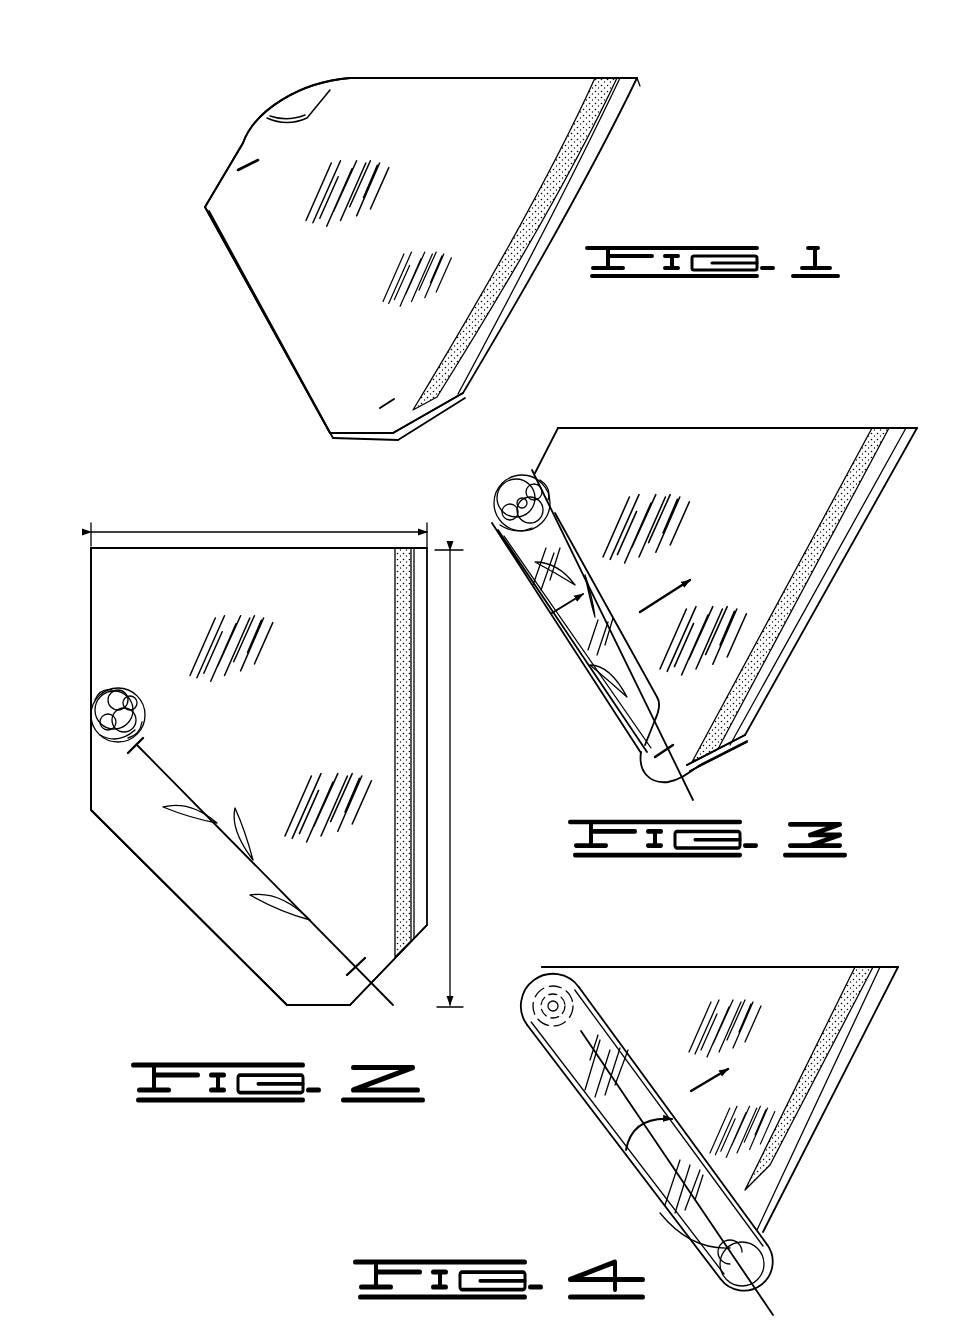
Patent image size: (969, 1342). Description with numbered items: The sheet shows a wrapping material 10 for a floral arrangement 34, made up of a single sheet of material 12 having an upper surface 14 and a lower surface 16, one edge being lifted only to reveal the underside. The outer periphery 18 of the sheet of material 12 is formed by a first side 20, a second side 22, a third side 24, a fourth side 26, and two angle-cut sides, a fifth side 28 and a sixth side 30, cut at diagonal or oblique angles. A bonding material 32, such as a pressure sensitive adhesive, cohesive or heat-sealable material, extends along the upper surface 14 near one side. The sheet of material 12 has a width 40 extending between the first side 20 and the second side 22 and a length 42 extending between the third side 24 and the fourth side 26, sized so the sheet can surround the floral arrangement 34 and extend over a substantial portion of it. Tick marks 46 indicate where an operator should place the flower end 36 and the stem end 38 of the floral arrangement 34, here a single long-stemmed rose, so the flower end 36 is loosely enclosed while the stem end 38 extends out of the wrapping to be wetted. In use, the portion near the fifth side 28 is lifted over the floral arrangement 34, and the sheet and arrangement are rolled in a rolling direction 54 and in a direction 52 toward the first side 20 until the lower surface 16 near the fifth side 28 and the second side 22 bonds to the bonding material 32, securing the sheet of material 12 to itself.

In FIG. 1, the wrapping material 10 is at (405, 240).
In FIG. 2, the wrapping material 10 is at (271, 757).
In FIG. 3, the wrapping material 10 is at (693, 560).
In FIG. 4, the wrapping material 10 is at (707, 1097).
In FIG. 1, the sheet of material 12 is at (405, 246).
In FIG. 2, the sheet of material 12 is at (271, 772).
In FIG. 3, the sheet of material 12 is at (726, 570).
In FIG. 4, the sheet of material 12 is at (720, 1068).
In FIG. 1, the upper surface 14 is at (363, 110).
In FIG. 2, the upper surface 14 is at (167, 567).
In FIG. 3, the upper surface 14 is at (607, 450).
In FIG. 4, the upper surface 14 is at (621, 985).
In FIG. 1, the lower surface 16 is at (295, 103).
In FIG. 1, the outer periphery 18 is at (232, 267).
In FIG. 2, the outer periphery 18 is at (141, 868).
In FIG. 3, the outer periphery 18 is at (568, 532).
In FIG. 1, the first side 20 is at (567, 217).
In FIG. 2, the first side 20 is at (432, 758).
In FIG. 3, the first side 20 is at (817, 608).
In FIG. 4, the first side 20 is at (809, 1140).
In FIG. 1, the second side 22 is at (220, 185).
In FIG. 2, the second side 22 is at (91, 598).
In FIG. 3, the second side 22 is at (542, 452).
In FIG. 4, the second side 22 is at (535, 978).
In FIG. 1, the third side 24 is at (445, 78).
In FIG. 2, the third side 24 is at (300, 548).
In FIG. 3, the third side 24 is at (677, 428).
In FIG. 4, the third side 24 is at (692, 967).
In FIG. 1, the fourth side 26 is at (355, 440).
In FIG. 2, the fourth side 26 is at (302, 1008).
In FIG. 3, the fourth side 26 is at (657, 710).
In FIG. 1, the fifth side 28 is at (290, 357).
In FIG. 2, the fifth side 28 is at (223, 945).
In FIG. 3, the fifth side 28 is at (557, 503).
In FIG. 1, the sixth side 30 is at (425, 410).
In FIG. 2, the sixth side 30 is at (388, 967).
In FIG. 3, the sixth side 30 is at (717, 757).
In FIG. 1, the bonding material 32 is at (540, 197).
In FIG. 2, the bonding material 32 is at (407, 728).
In FIG. 3, the bonding material 32 is at (805, 572).
In FIG. 4, the bonding material 32 is at (805, 1090).
In FIG. 2, the floral arrangement 34 is at (120, 690).
In FIG. 2, the flower end 36 is at (112, 700).
In FIG. 2, the stem end 38 is at (380, 1008).
In FIG. 3, the stem end 38 is at (680, 785).
In FIG. 4, the stem end 38 is at (767, 1305).
In FIG. 2, the width 40 is at (228, 530).
In FIG. 2, the length 42 is at (455, 770).
In FIG. 1, the tick marks 46 is at (245, 162).
In FIG. 2, the tick marks 46 is at (140, 752).
In FIG. 3, the tick marks 46 is at (677, 773).
In FIG. 3, the direction 52 is at (656, 592).
In FIG. 4, the direction 52 is at (703, 1076).
In FIG. 3, the rolling direction 54 is at (557, 607).
In FIG. 4, the rolling direction 54 is at (626, 1150).